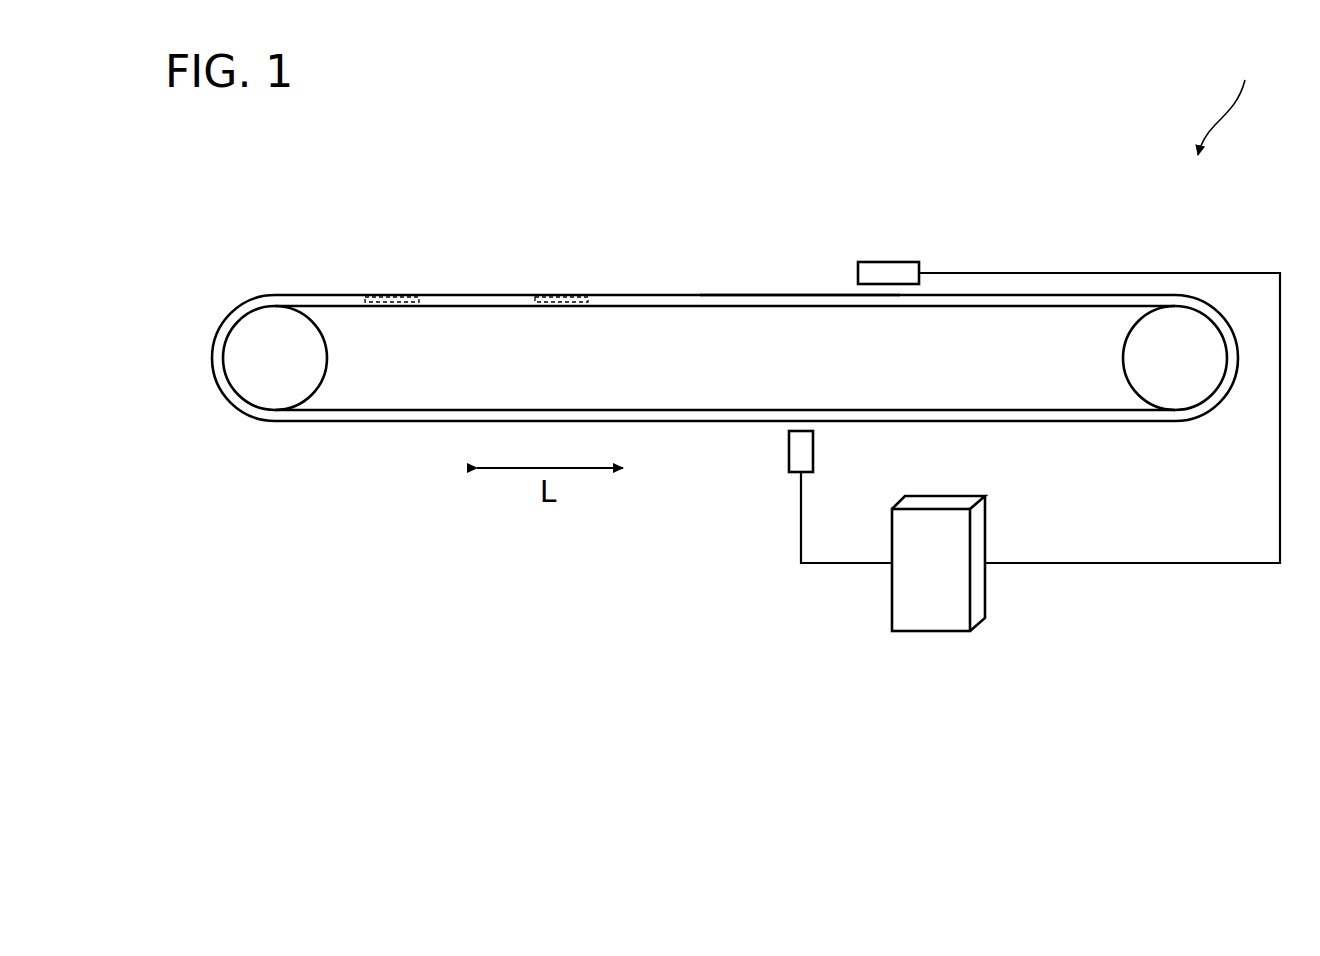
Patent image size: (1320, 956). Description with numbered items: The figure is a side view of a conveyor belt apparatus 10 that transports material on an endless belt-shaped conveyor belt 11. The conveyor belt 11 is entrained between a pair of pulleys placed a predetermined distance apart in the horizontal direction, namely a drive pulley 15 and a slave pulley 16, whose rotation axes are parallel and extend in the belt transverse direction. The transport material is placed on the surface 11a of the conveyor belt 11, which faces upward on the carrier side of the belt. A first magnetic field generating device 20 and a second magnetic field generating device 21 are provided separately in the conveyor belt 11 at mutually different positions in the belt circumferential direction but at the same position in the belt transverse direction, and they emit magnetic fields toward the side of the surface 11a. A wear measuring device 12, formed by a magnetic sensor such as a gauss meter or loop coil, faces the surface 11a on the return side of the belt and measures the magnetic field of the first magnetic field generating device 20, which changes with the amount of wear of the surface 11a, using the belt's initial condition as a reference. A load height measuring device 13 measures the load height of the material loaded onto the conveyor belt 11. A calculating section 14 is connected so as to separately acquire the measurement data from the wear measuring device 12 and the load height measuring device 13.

The conveyor belt apparatus 10 is at (1231, 76).
The conveyor belt 11 is at (401, 415).
The surface 11a is at (723, 294).
The wear measuring device 12 is at (789, 450).
The load height measuring device 13 is at (888, 268).
The calculating section 14 is at (931, 619).
The drive pulley 15 is at (1173, 394).
The slave pulley 16 is at (270, 396).
The first magnetic field generating device 20 is at (393, 298).
The second magnetic field generating device 21 is at (563, 298).